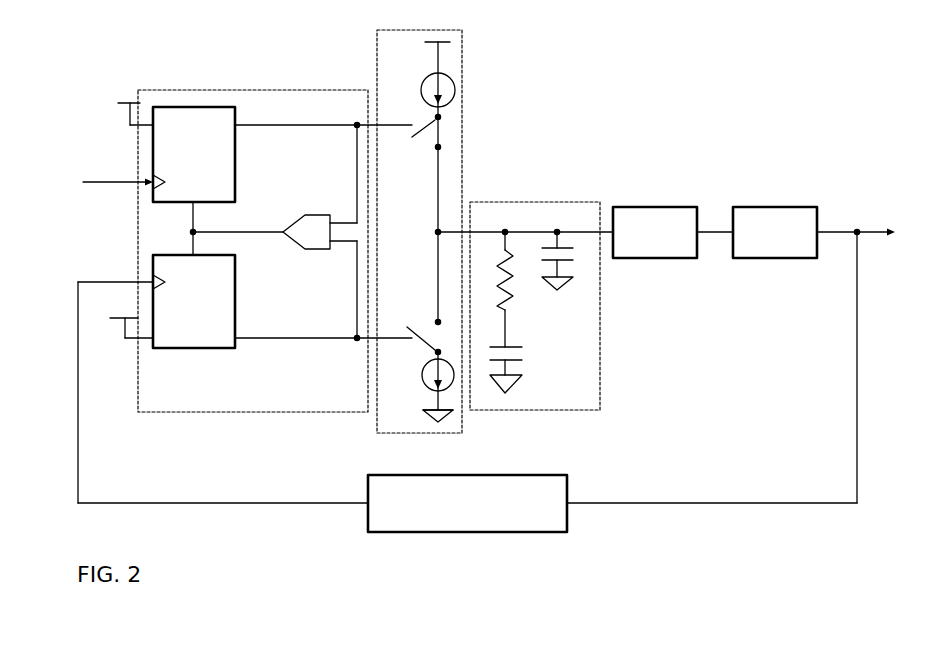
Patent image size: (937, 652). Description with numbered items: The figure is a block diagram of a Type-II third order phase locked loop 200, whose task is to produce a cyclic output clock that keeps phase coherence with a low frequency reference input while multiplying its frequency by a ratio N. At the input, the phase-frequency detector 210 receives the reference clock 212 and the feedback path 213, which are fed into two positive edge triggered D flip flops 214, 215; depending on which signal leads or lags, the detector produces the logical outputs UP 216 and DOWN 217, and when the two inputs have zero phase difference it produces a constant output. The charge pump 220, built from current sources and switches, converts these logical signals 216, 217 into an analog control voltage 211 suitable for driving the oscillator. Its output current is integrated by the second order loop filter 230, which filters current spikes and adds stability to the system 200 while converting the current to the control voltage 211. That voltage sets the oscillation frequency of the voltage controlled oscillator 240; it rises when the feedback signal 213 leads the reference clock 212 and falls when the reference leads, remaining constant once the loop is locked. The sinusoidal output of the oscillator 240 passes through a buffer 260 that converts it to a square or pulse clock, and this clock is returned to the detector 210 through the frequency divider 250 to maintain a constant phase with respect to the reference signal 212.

The phase locked loop 200 is at (748, 577).
The phase-frequency detector 210 is at (306, 90).
The control voltage 211 is at (463, 240).
The reference clock 212 is at (93, 185).
The feedback path 213 is at (75, 338).
The flip flop 214 is at (185, 107).
The flip flop 215 is at (180, 353).
The UP signal 216 is at (265, 127).
The DOWN signal 217 is at (287, 343).
The charge pump 220 is at (463, 59).
The loop filter 230 is at (602, 383).
The voltage controlled oscillator 240 is at (680, 205).
The frequency divider 250 is at (497, 533).
The buffer 260 is at (780, 205).